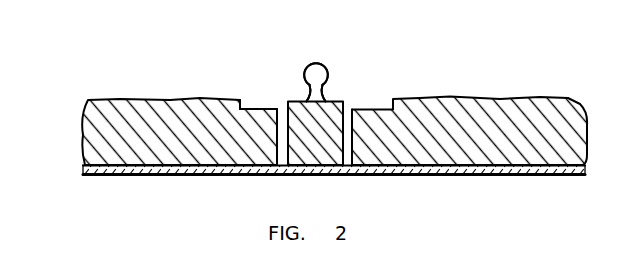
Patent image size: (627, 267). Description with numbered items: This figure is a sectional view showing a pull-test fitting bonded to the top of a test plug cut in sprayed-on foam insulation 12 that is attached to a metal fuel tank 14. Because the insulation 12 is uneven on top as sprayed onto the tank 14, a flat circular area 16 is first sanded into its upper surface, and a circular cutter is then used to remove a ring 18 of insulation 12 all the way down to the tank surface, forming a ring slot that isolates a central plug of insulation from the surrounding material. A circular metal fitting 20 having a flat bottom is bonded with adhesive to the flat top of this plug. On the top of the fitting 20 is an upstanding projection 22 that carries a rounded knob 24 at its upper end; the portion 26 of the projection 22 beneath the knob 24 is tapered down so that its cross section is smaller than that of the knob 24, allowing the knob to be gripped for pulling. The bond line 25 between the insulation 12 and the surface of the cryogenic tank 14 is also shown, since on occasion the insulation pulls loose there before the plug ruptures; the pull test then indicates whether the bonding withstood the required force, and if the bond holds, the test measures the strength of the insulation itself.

The sprayed-on foam insulation 12 is at (132, 98).
The metal fuel tank 14 is at (480, 176).
The flat circular area 16 is at (250, 108).
The ring 18 is at (351, 120).
The circular metal fitting 20 is at (338, 100).
The upstanding projection 22 is at (322, 62).
The rounded knob 24 is at (308, 66).
The bond line 25 is at (338, 174).
The tapered portion 26 is at (308, 96).